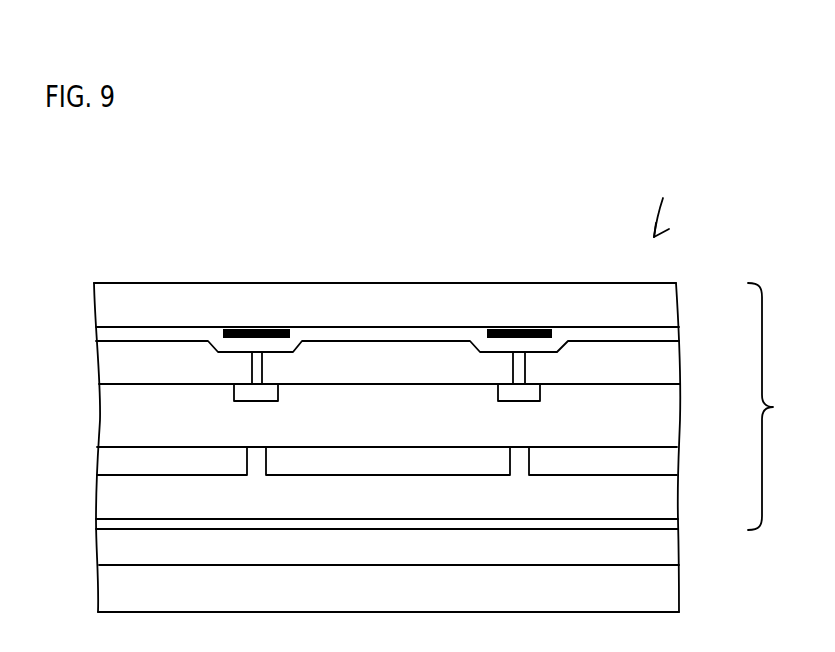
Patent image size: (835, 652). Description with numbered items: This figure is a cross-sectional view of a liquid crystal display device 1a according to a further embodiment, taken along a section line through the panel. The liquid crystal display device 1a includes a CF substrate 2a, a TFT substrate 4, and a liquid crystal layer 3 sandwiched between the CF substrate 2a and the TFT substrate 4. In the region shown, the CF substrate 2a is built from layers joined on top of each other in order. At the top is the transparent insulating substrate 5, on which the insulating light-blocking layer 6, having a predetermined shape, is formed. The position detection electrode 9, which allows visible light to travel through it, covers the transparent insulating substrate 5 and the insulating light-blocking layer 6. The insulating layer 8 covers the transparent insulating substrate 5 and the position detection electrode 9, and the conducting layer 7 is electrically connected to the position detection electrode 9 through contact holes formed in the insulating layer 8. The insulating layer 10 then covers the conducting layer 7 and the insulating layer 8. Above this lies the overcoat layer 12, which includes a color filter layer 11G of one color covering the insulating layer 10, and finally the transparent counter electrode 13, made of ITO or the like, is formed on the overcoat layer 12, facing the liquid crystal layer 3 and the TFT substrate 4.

The liquid crystal display device 1a is at (666, 206).
The CF substrate 2a is at (776, 406).
The liquid crystal layer 3 is at (667, 545).
The TFT substrate 4 is at (667, 582).
The transparent insulating substrate 5 is at (667, 302).
The insulating light-blocking layer 6 is at (258, 329).
The conducting layer 7 is at (276, 395).
The insulating layer 8 is at (667, 365).
The position detection electrode 9 is at (667, 330).
The insulating layer 10 is at (667, 422).
The color filter layer 11G is at (207, 467).
The overcoat layer 12 is at (667, 492).
The transparent counter electrode 13 is at (667, 520).